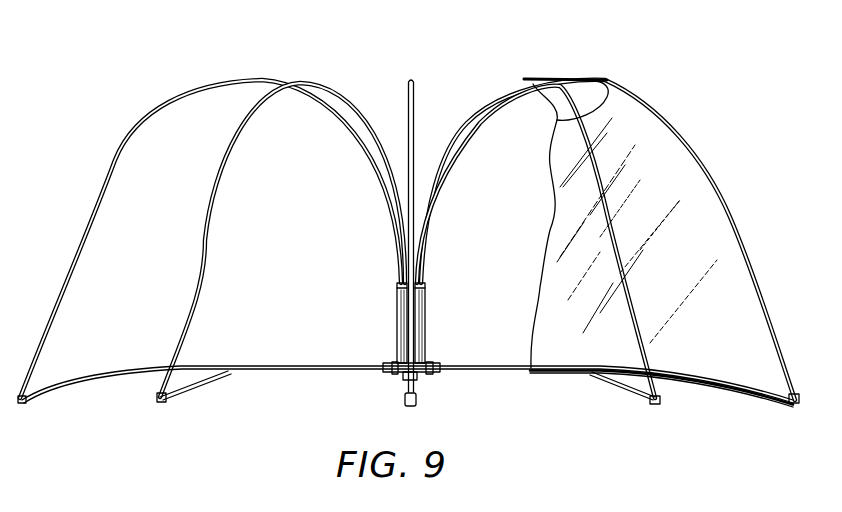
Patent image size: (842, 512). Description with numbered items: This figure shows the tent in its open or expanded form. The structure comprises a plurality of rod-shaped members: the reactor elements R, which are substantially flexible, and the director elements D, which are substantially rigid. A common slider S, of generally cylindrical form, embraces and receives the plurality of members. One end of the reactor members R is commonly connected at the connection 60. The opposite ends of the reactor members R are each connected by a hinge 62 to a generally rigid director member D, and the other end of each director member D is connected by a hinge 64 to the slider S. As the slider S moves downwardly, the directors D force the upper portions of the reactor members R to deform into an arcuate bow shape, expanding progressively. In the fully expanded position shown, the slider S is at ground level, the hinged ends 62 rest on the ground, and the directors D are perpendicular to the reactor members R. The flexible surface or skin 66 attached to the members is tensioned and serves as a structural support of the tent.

The reactor element R is at (207, 232).
The surface or skin 66 is at (682, 182).
The hinge 62 is at (157, 398).
The director element D is at (216, 378).
The slider element S is at (417, 324).
The common connection 60 is at (403, 377).
The hinge 64 is at (437, 375).